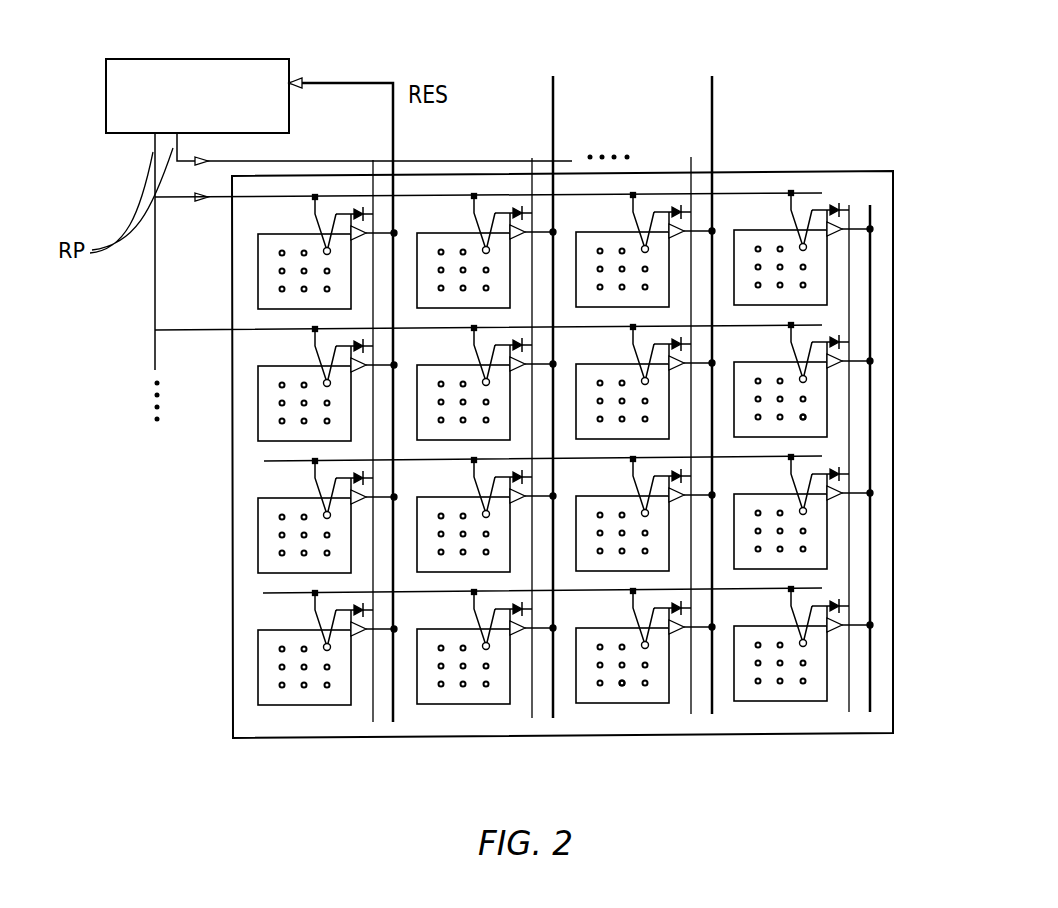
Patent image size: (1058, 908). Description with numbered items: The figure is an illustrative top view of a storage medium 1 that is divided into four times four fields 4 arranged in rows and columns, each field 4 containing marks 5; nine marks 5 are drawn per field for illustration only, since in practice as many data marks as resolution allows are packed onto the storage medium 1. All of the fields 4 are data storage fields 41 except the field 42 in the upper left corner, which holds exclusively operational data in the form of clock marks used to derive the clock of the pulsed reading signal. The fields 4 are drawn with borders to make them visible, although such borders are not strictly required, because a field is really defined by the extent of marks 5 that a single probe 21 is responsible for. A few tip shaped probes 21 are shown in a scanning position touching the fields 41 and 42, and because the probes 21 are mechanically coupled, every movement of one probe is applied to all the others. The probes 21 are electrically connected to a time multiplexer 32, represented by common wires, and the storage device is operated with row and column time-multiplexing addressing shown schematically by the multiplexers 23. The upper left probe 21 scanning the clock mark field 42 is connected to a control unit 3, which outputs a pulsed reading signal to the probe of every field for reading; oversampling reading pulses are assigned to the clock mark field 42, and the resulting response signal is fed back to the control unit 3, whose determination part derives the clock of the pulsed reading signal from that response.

The storage medium 1 is at (647, 172).
The control unit 3 is at (127, 95).
The field 4 is at (723, 225).
The mark 5 is at (804, 415).
The probe 21 is at (328, 212).
The multiplexer 23 is at (583, 193).
The time multiplexer 32 is at (868, 212).
The data storage field 41 is at (258, 413).
The clock mark field 42 is at (258, 276).